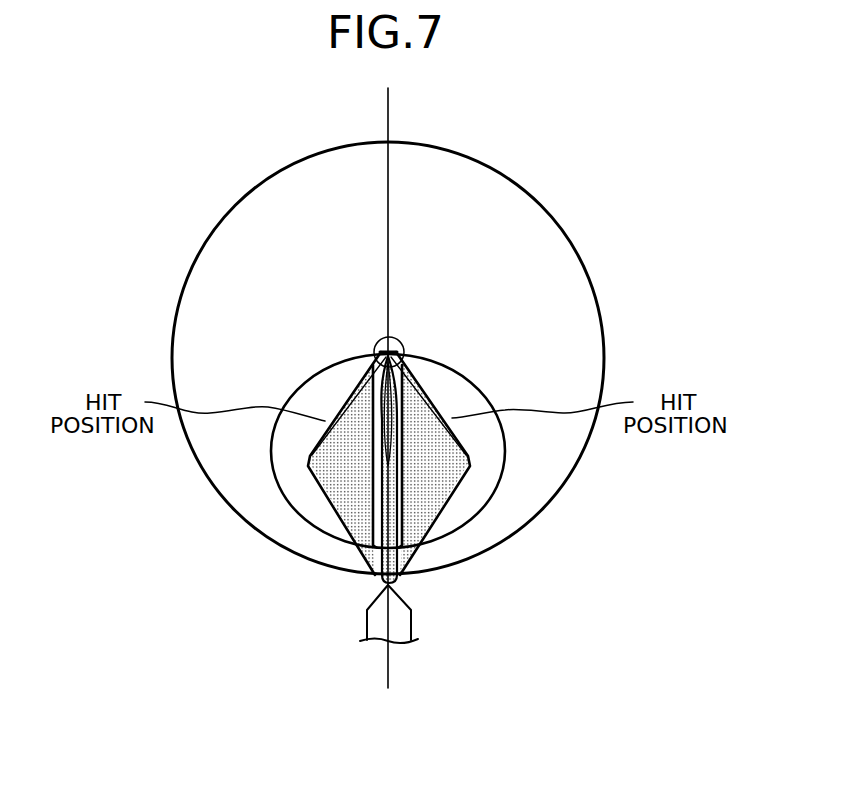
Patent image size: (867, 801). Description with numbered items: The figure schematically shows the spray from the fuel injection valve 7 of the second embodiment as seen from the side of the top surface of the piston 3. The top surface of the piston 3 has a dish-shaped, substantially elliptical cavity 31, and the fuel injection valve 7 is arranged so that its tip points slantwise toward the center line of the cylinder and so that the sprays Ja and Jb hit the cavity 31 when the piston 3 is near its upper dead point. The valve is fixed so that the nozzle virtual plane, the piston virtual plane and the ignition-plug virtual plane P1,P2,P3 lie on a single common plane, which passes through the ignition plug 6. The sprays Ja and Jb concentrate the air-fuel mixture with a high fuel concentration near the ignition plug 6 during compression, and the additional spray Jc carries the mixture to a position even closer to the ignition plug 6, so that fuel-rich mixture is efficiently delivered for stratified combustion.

The piston 3 is at (512, 178).
The ignition plug 6 is at (400, 343).
The cavity 31 is at (468, 508).
The fuel injection valve 7 is at (411, 618).
The spray Ja is at (440, 527).
The spray Jb is at (347, 525).
The spray Jc is at (372, 575).
The nozzle virtual plane, piston virtual plane, ignition-plug virtual plane P1,P2,P3 is at (388, 675).